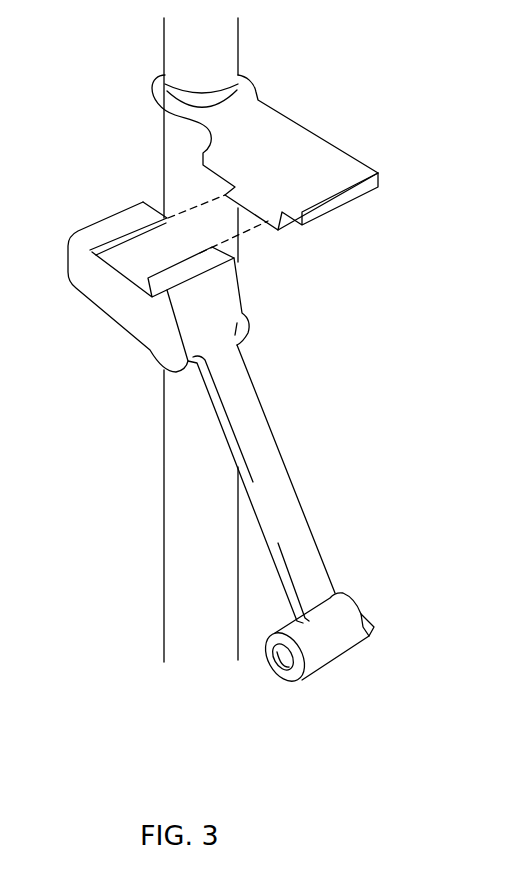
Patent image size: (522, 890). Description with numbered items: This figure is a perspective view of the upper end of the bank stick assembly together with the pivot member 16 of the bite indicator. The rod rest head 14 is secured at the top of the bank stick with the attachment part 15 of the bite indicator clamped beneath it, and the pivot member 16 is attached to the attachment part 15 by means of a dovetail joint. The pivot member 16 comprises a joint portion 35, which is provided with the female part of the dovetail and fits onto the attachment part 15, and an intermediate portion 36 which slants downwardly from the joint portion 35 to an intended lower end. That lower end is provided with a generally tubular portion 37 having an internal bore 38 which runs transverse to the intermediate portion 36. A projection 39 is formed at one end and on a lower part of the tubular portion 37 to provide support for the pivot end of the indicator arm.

The rod rest head 14 is at (239, 50).
The attachment part 15 is at (338, 134).
The pivot member 16 is at (239, 484).
The joint portion 35 is at (115, 310).
The intermediate portion 36 is at (265, 533).
The tubular portion 37 is at (334, 673).
The internal bore 38 is at (287, 667).
The projection 39 is at (375, 625).